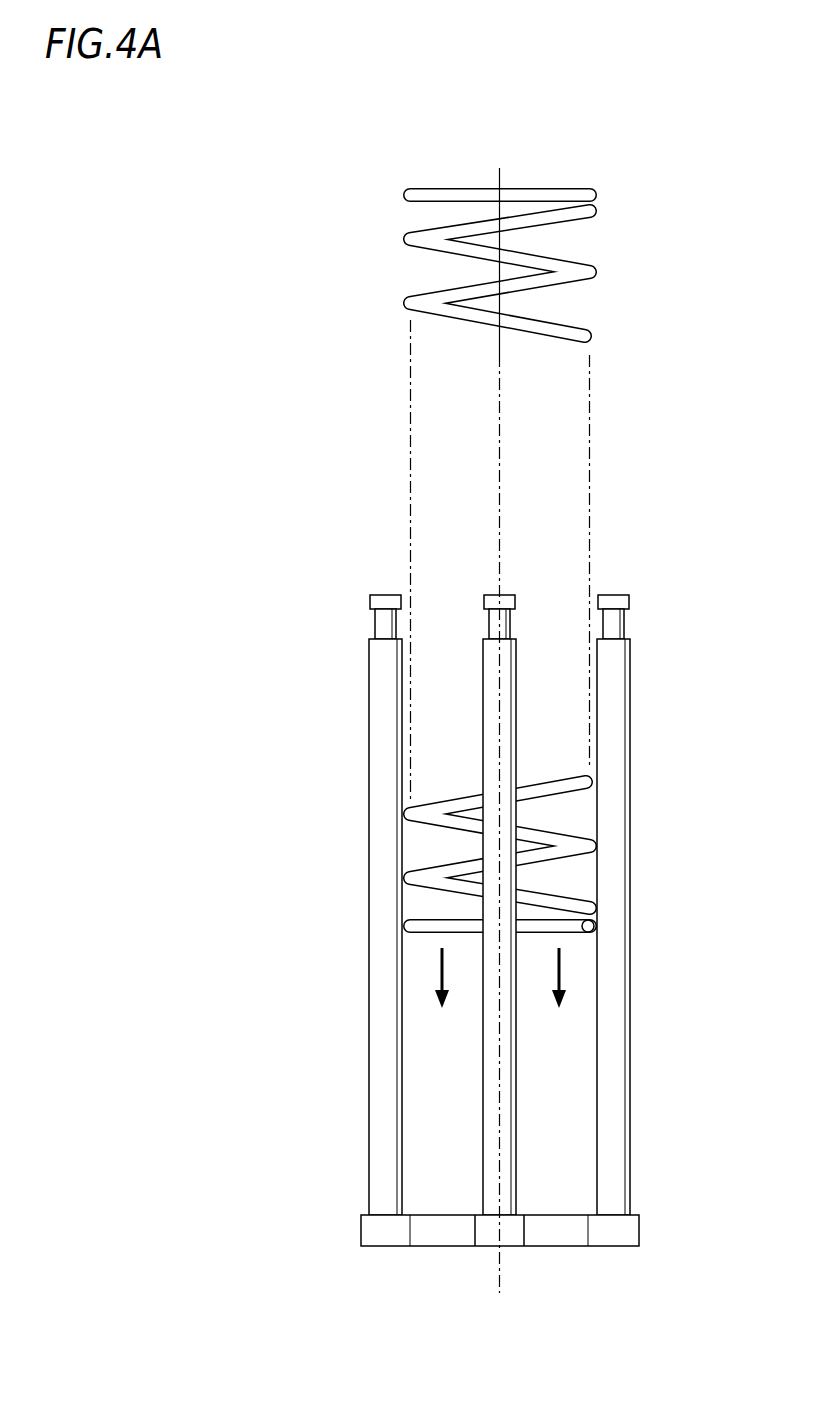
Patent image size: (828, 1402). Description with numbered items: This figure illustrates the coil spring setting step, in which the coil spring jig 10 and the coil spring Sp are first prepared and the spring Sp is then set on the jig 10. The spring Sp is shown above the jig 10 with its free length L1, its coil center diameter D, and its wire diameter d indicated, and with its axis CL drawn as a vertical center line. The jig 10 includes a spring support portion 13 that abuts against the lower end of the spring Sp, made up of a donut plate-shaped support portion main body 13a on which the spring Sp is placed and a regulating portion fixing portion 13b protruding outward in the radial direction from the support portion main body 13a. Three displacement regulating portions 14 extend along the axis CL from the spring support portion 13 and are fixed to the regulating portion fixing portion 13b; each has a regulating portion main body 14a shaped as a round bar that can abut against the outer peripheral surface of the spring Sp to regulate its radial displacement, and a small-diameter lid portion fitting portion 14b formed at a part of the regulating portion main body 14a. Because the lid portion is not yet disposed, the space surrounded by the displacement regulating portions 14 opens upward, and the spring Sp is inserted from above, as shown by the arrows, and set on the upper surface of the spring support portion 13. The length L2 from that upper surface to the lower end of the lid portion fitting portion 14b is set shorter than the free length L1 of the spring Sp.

The coil spring jig 10 is at (340, 130).
The coil spring Sp is at (597, 272).
The displacement regulating portion 14 is at (488, 875).
The regulating portion main body 14a is at (488, 905).
The lid portion fitting portion 14b is at (386, 627).
The spring support portion 13 is at (465, 1236).
The support portion main body 13a is at (438, 1228).
The regulating portion fixing portion 13b is at (387, 1232).
The axis CL is at (503, 491).
The coil center diameter D is at (597, 185).
The wire diameter d is at (554, 295).
The free length L1 is at (400, 933).
The length L2 is at (630, 639).